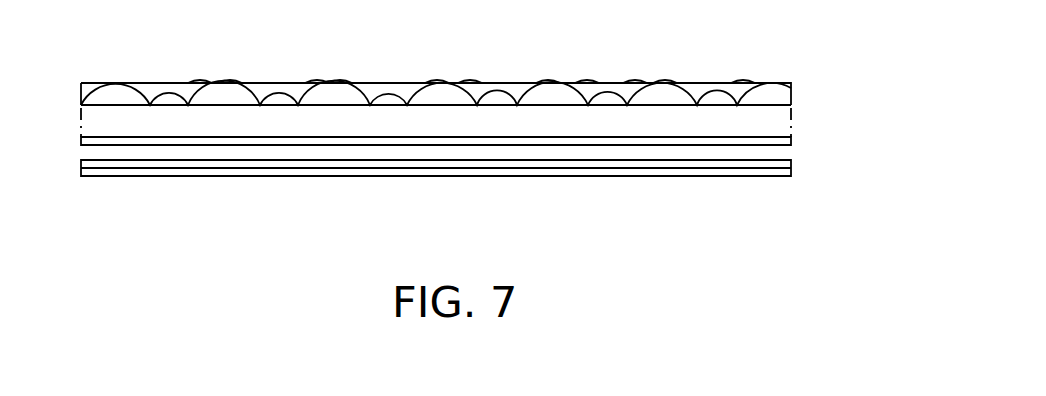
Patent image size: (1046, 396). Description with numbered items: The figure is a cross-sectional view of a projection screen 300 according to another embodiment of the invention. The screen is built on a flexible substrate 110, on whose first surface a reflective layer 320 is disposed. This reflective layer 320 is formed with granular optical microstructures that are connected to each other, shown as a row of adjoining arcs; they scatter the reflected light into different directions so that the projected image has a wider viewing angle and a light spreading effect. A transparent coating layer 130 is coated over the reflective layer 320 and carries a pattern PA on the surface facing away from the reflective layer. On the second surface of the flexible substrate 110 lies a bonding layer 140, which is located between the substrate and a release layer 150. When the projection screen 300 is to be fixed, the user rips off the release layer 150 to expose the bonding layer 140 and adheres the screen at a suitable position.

The transparent coating layer 130 is at (735, 90).
The reflective layer 320 is at (787, 101).
The flexible substrate 110 is at (785, 123).
The bonding layer 140 is at (787, 143).
The release layer 150 is at (787, 153).
The pattern PA is at (637, 67).
The projection screen 300 is at (794, 227).